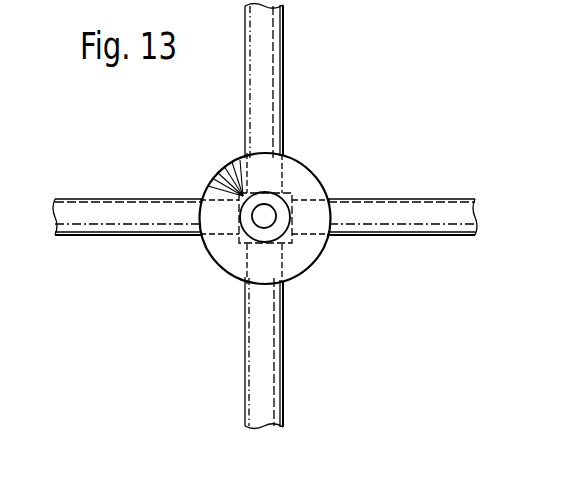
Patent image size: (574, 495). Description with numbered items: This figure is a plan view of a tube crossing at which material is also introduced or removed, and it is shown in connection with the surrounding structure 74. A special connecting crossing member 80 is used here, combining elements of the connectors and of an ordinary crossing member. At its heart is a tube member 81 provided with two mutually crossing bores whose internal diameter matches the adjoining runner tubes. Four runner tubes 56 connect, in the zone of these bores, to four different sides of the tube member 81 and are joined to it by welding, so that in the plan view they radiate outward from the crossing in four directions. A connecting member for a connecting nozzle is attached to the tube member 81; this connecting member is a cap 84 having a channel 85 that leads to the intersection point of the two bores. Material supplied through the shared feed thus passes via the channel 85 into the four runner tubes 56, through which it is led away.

The runner tube 56 is at (275, 50).
The hub assembly 74 is at (197, 138).
The connecting crossing member 80 is at (318, 268).
The tube member 81 is at (291, 197).
The cap 84 is at (222, 262).
The channel 85 is at (259, 216).